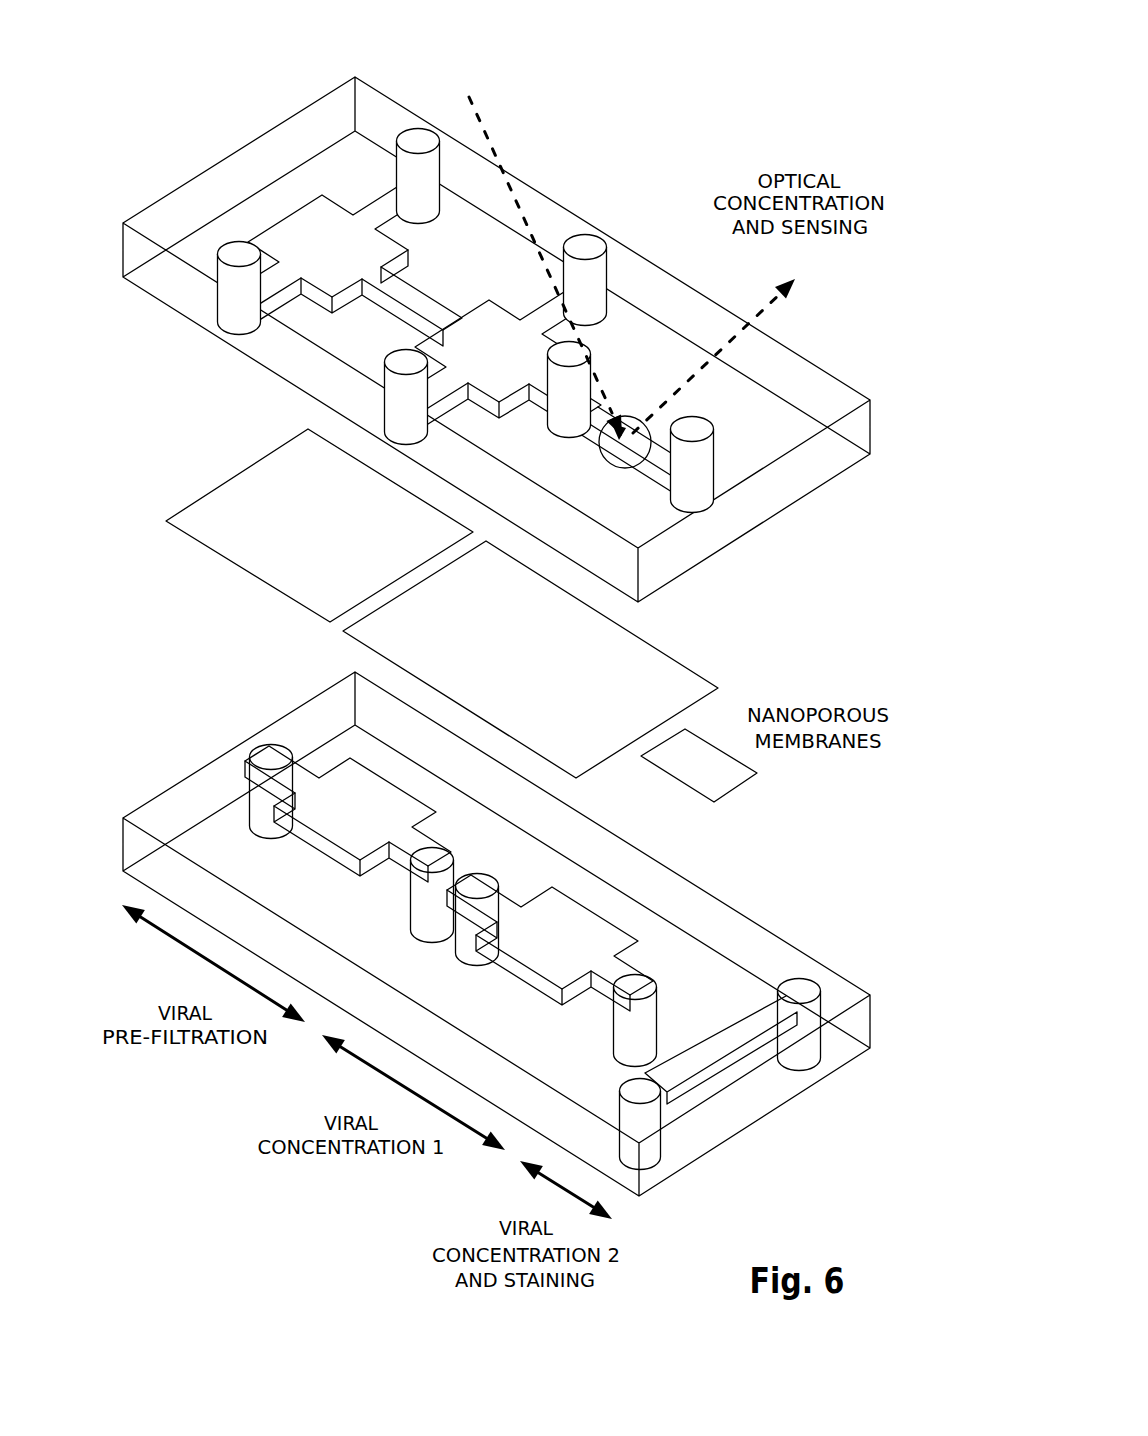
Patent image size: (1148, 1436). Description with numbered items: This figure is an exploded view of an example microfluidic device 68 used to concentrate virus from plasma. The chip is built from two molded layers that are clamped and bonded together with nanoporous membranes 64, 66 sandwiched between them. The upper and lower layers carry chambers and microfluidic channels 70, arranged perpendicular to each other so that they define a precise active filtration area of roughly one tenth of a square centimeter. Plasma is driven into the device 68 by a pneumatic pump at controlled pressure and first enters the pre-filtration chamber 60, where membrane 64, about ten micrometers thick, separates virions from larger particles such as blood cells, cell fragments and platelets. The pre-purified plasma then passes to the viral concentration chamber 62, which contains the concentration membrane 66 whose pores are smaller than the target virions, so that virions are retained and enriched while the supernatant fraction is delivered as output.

The pre-filtration chamber 60 is at (298, 235).
The viral concentration chamber 62 is at (472, 317).
The membrane 64 is at (203, 510).
The concentration membrane 66 is at (663, 679).
The microfluidic device 68 is at (490, 601).
The microfluidic channel 70 is at (423, 136).